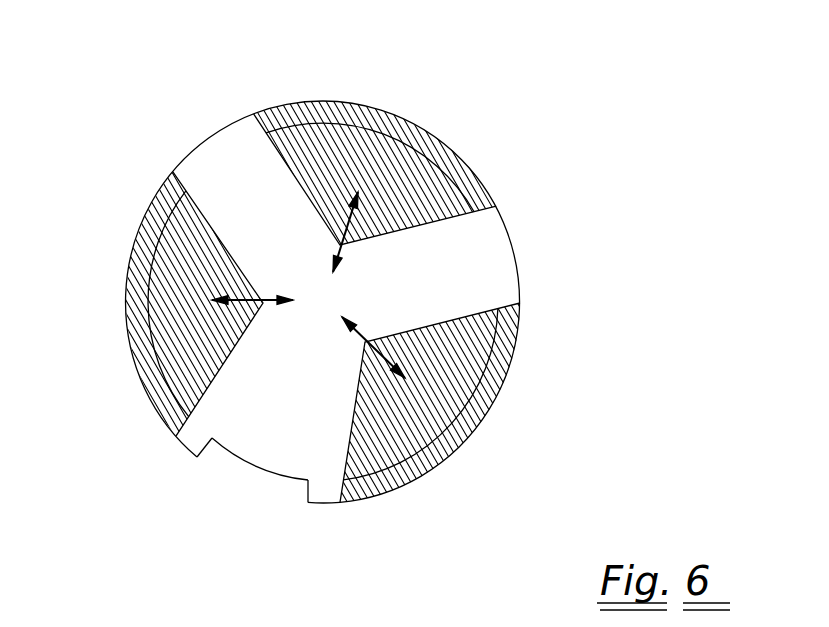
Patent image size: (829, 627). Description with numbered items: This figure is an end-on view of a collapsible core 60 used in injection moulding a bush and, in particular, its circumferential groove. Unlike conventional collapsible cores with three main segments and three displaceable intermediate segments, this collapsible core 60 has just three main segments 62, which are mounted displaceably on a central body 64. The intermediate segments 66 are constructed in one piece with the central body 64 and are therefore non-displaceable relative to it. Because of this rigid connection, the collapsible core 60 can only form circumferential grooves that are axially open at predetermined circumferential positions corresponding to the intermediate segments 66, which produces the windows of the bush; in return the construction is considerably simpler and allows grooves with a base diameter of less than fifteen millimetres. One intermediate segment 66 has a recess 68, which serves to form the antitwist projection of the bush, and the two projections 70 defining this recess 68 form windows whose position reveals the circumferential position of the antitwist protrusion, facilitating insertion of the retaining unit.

The collapsible core 60 is at (614, 108).
The main segment 62 is at (405, 113).
The central body 64 is at (240, 193).
The intermediate segment 66 is at (200, 152).
The recess 68 is at (238, 472).
The projection 70 is at (198, 437).